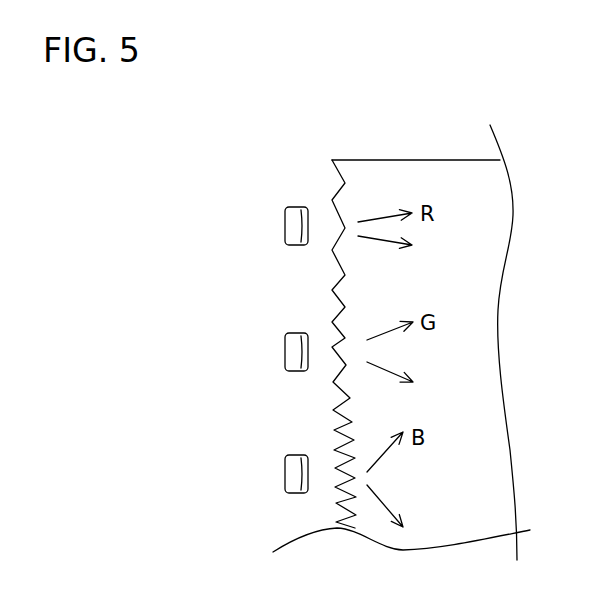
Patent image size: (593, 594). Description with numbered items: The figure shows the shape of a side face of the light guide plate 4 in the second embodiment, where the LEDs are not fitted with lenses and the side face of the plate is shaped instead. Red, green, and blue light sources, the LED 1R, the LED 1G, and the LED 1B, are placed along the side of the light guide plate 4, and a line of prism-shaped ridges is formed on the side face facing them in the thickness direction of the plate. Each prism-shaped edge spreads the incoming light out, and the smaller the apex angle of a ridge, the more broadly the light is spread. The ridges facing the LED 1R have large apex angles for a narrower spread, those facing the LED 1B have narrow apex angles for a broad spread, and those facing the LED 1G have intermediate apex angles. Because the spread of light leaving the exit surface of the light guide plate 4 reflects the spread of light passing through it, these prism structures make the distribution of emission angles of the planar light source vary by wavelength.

The light guide plate 4 is at (390, 170).
The red LED 1R is at (285, 213).
The green LED 1G is at (285, 349).
The blue LED 1B is at (285, 476).